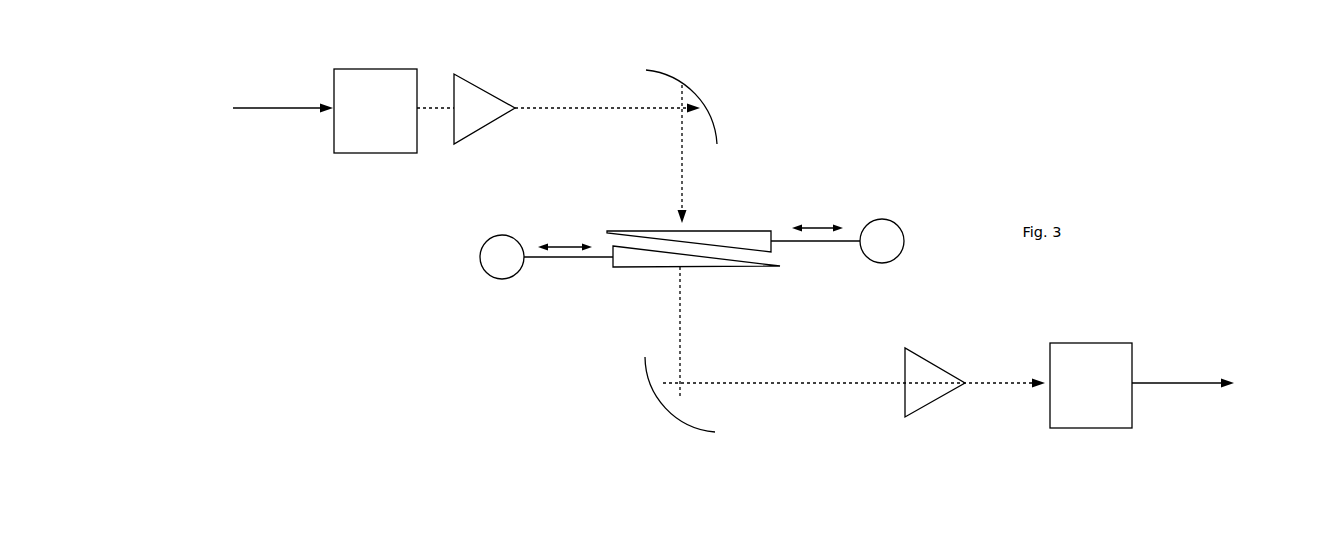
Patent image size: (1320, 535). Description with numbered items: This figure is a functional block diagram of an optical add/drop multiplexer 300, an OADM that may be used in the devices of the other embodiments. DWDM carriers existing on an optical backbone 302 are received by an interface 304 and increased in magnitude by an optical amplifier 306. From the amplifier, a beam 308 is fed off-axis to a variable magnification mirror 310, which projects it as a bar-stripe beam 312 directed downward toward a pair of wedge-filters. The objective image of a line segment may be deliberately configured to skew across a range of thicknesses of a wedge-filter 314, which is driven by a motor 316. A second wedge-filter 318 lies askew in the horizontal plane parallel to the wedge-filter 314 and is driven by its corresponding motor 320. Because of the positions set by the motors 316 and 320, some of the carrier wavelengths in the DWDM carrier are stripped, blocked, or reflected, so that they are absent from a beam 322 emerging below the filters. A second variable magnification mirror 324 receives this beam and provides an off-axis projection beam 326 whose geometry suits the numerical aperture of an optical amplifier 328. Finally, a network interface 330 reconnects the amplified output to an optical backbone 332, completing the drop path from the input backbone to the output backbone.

The optical add/drop multiplexer 300 is at (1035, 74).
The optical backbone 302 is at (265, 105).
The interface 304 is at (375, 133).
The optical amplifier 306 is at (487, 100).
The beam 308 is at (607, 124).
The variable magnification mirror 310 is at (729, 91).
The bar-stripe beam 312 is at (722, 154).
The wedge-filter 314 is at (646, 222).
The motor 316 is at (843, 222).
The second wedge-filter 318 is at (729, 272).
The motor 320 is at (515, 257).
The beam 322 is at (637, 332).
The variable magnification mirror 324 is at (632, 406).
The off-axis projection beam 326 is at (854, 394).
The optical amplifier 328 is at (952, 357).
The network interface 330 is at (1091, 364).
The optical backbone 332 is at (1204, 379).